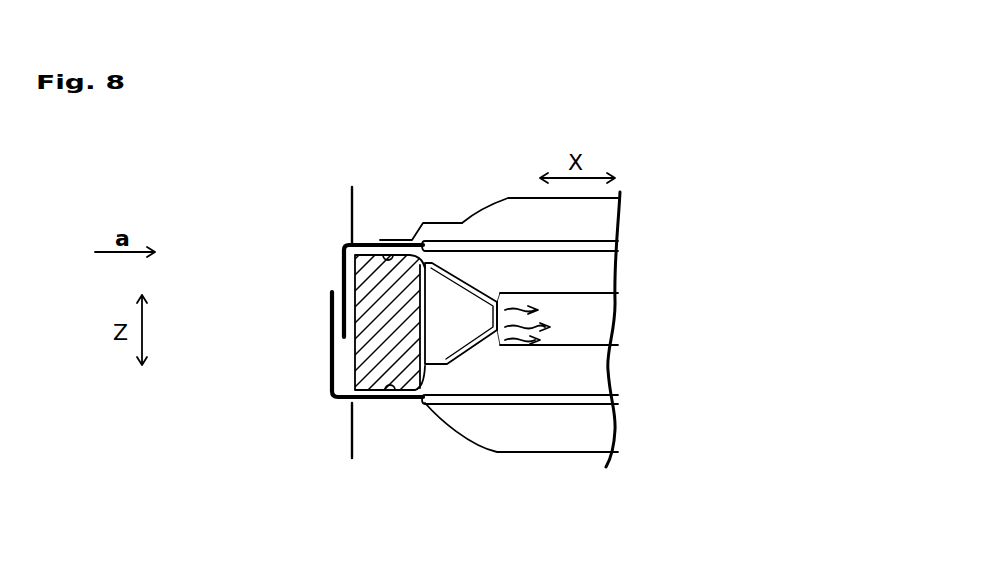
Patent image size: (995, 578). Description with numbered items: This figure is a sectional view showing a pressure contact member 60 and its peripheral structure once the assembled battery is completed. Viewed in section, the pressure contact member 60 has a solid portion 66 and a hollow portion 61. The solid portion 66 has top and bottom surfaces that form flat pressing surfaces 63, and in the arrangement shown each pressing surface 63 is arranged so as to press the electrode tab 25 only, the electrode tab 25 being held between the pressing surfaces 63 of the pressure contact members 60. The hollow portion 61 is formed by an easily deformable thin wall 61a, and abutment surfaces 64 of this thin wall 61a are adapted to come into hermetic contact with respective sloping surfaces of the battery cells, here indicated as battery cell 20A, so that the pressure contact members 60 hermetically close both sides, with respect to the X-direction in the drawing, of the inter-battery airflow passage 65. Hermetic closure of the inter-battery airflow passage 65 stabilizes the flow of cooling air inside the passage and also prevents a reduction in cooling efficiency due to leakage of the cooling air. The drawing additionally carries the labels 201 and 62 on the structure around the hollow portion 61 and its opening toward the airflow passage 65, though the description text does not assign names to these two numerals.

The pressure contact member 60 is at (352, 217).
The pressing surface 63 is at (390, 250).
The electrode tab 25 is at (341, 272).
The solid portion 66 is at (330, 330).
The bump portion 201 is at (428, 222).
The hollow portion 61 is at (461, 313).
The abutment surface 64 is at (479, 265).
The thin wall 61a is at (496, 268).
The nozzle opening 62 is at (505, 300).
The tube (20A/20B) 20A is at (598, 224).
The inter-battery airflow passage 65 is at (600, 328).